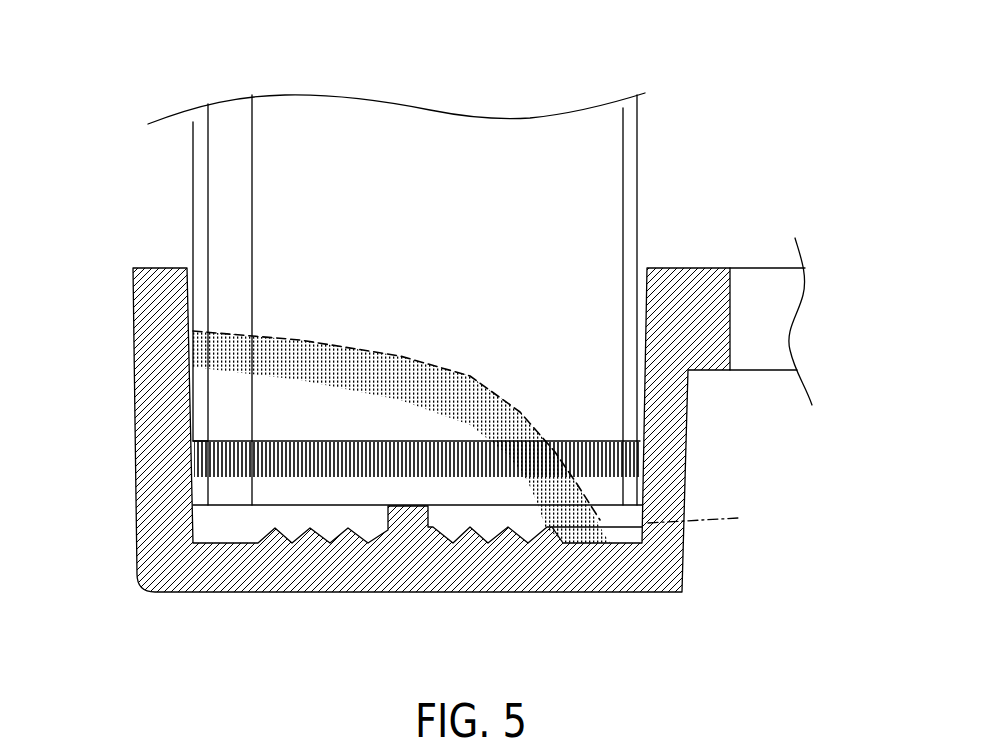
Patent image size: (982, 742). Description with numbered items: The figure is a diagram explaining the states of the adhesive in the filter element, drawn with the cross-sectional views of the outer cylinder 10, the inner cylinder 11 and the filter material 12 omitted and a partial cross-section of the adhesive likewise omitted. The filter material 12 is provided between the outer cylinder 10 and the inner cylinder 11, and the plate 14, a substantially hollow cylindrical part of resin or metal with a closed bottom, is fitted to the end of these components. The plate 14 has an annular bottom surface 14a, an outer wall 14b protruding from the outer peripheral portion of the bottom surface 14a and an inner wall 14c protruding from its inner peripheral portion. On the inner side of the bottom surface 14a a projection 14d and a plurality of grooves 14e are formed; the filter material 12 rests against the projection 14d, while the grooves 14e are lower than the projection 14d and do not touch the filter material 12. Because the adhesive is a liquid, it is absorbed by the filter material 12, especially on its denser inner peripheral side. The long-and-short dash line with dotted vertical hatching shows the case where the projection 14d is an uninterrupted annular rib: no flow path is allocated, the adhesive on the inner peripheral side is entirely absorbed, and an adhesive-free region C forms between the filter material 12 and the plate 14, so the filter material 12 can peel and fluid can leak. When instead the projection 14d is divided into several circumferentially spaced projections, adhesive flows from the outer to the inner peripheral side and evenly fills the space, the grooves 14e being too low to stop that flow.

The outer cylinder 10 is at (199, 137).
The inner cylinder 11 is at (630, 118).
The filter material 12 is at (473, 133).
The plate 14 is at (707, 246).
The bottom surface 14a is at (622, 577).
The outer wall 14b is at (147, 330).
The inner wall 14c is at (686, 466).
The projection 14d is at (393, 512).
The grooves 14e is at (470, 528).
The region C is at (703, 522).